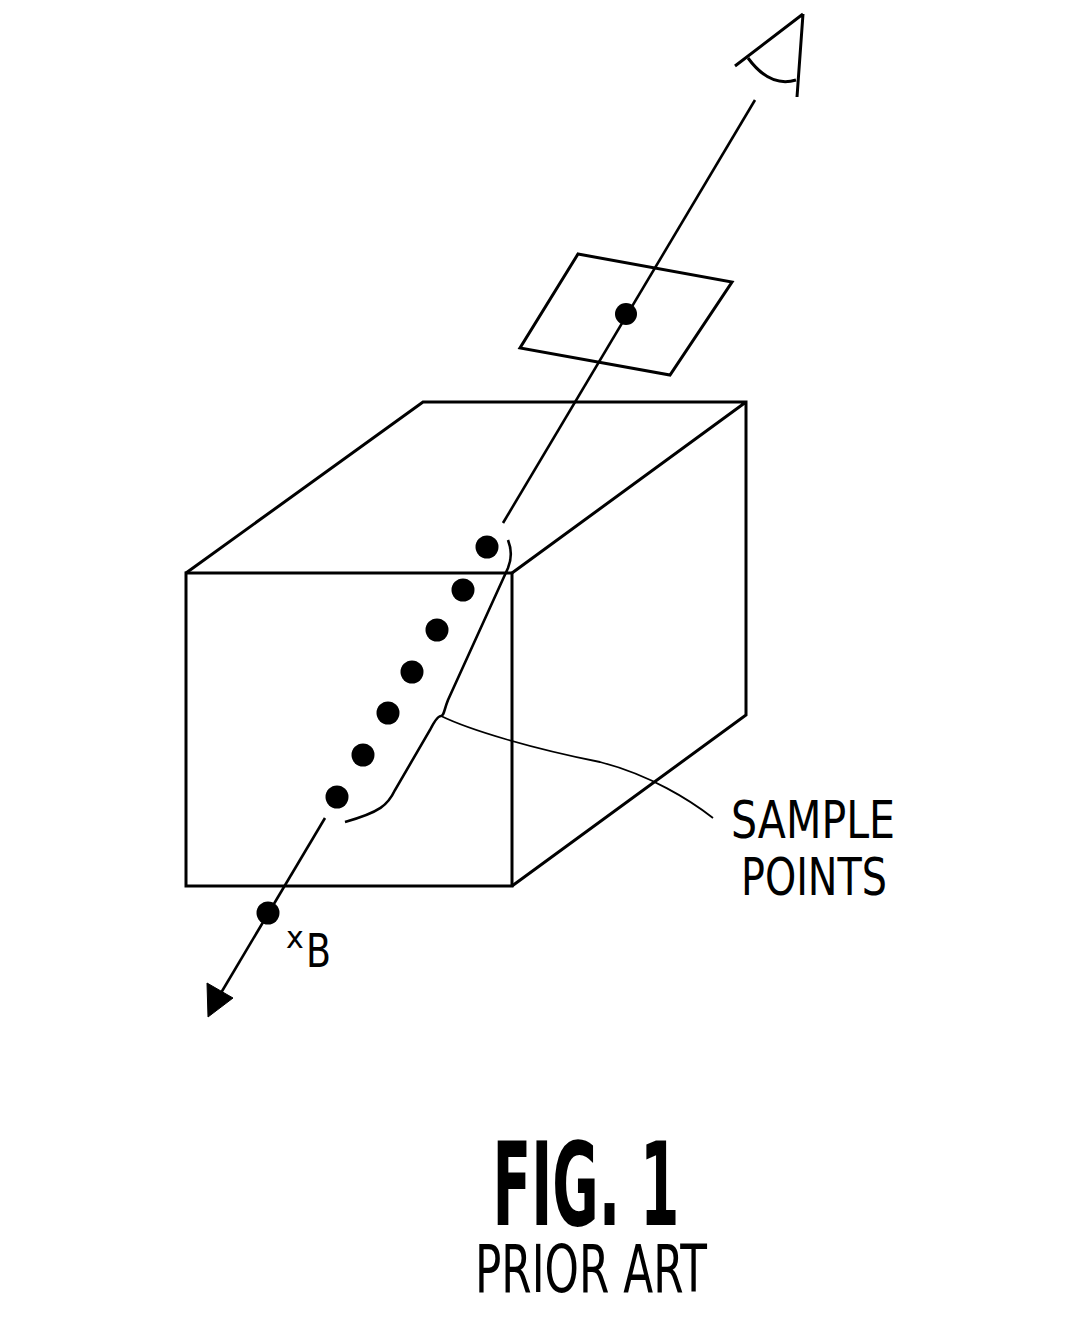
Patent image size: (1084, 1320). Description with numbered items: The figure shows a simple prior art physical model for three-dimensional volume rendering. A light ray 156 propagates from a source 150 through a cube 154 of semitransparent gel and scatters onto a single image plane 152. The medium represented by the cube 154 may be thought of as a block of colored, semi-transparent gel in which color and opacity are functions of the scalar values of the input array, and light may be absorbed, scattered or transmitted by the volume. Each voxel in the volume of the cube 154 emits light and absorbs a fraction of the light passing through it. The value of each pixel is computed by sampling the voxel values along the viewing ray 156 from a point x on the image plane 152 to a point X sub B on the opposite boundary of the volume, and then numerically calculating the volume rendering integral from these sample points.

The source 150 is at (800, 50).
The image plane 152 is at (702, 332).
The cube 154 is at (749, 548).
The light ray 156 is at (207, 1003).